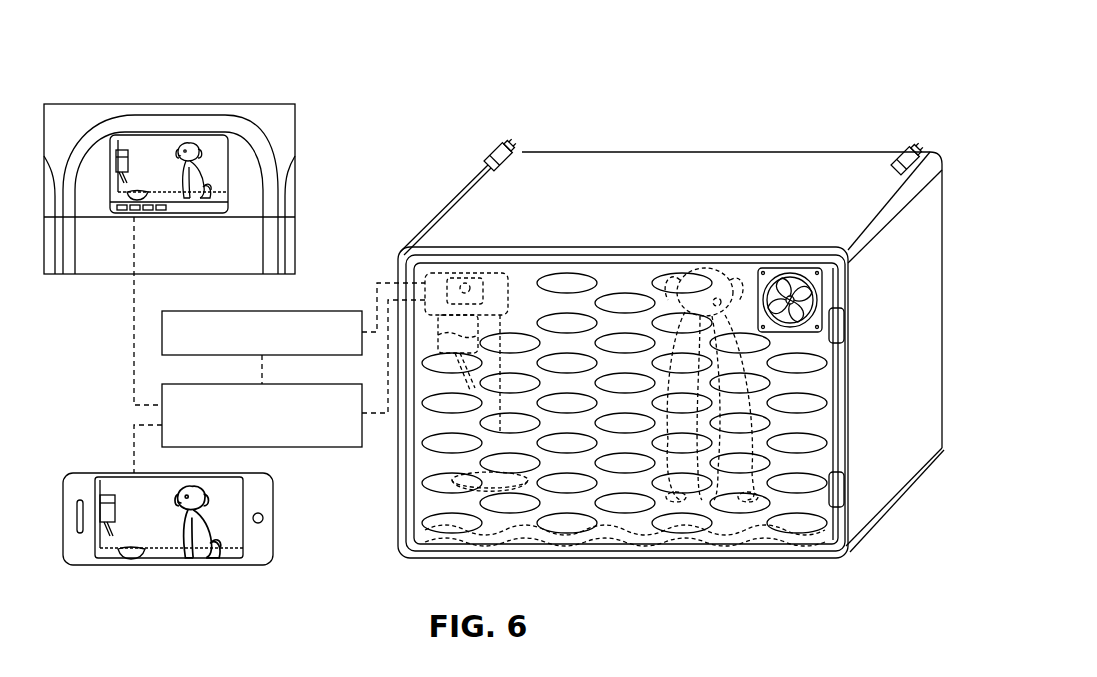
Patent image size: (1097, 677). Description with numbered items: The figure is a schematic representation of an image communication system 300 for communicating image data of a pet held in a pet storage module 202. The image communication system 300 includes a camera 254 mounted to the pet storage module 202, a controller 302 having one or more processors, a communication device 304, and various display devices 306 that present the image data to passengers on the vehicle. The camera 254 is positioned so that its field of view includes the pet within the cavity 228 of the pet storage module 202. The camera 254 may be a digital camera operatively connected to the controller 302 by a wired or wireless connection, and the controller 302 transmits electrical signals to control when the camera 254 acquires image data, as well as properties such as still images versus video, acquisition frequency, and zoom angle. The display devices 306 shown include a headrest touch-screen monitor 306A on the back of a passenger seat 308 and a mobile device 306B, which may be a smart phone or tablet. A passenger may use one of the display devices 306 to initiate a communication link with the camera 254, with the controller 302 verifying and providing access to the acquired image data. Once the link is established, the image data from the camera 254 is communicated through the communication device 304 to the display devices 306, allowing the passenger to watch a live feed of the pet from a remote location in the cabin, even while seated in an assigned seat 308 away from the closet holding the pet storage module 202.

The image communication system 300 is at (344, 96).
The pet storage module 202 is at (427, 137).
The cavity 228 is at (522, 274).
The camera 254 is at (440, 272).
The controller 302 is at (312, 310).
The communication device 304 is at (323, 448).
The display devices 306 is at (148, 132).
The headrest touch-screen monitor 306A is at (193, 140).
The mobile device 306B is at (163, 553).
The passenger seat 308 is at (240, 177).